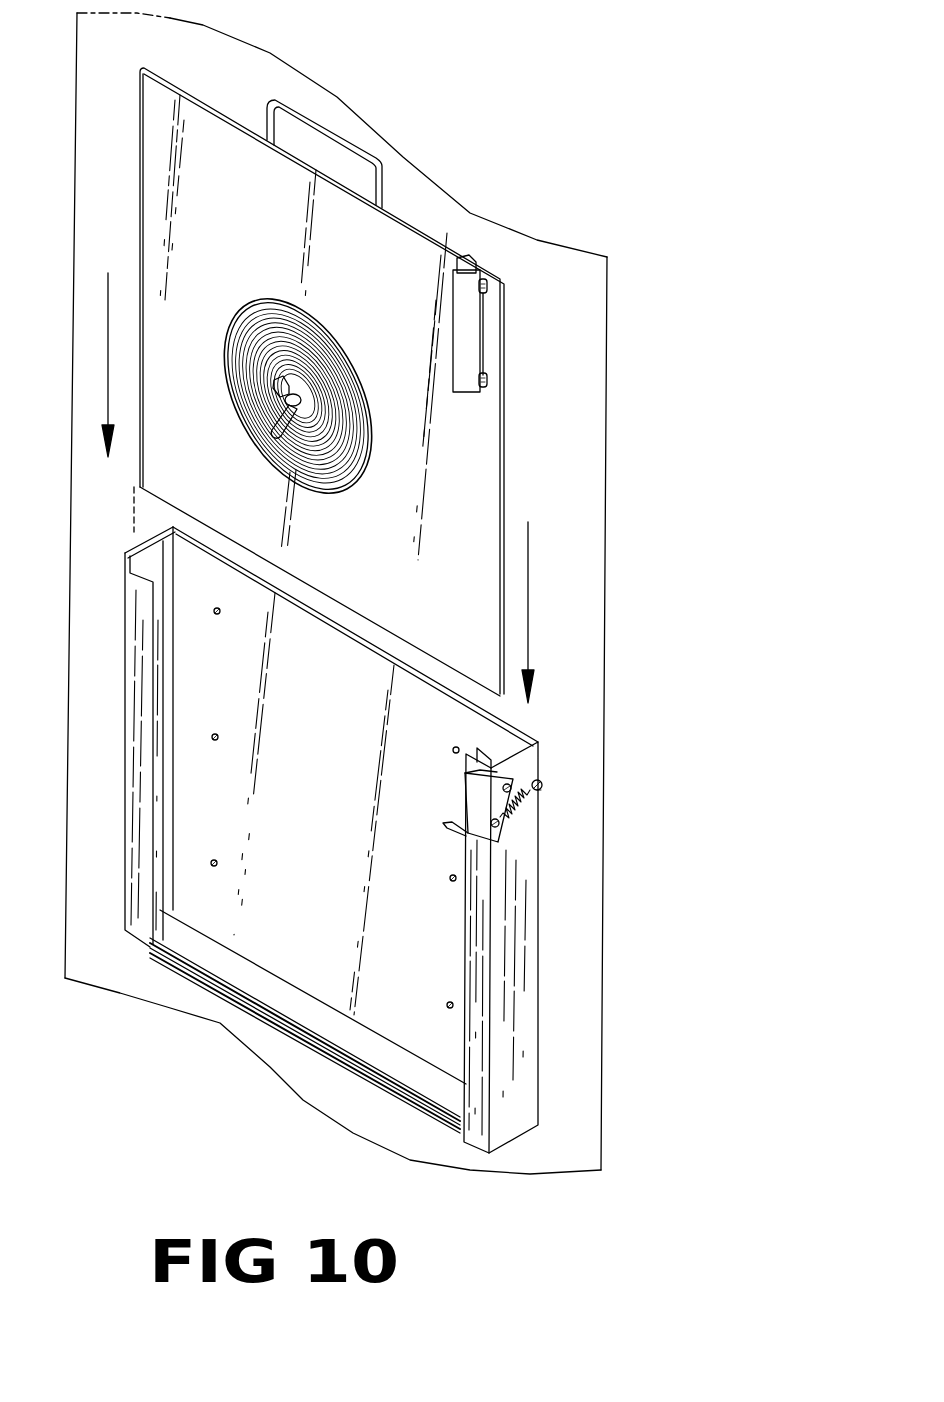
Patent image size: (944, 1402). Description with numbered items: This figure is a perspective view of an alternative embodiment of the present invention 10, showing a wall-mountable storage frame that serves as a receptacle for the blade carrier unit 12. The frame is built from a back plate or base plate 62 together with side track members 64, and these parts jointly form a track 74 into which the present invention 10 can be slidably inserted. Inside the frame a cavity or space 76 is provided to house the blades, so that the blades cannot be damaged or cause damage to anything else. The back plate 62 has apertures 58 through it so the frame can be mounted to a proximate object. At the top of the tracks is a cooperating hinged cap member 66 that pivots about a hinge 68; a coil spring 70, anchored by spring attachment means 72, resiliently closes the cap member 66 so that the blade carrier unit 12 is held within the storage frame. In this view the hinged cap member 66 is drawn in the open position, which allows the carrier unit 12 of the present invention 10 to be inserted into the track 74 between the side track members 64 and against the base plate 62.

The present invention 10 is at (438, 160).
The blade carrier unit 12 is at (478, 415).
The apertures 58 is at (455, 753).
The back plate or base plate 62 is at (513, 742).
The side track members 64 is at (530, 888).
The hinged cap member 66 is at (470, 830).
The hinge 68 is at (508, 785).
The coil spring means 70 is at (538, 812).
The spring attachment means 72 is at (547, 788).
The track 74 is at (142, 572).
The cavity or space 76 is at (160, 550).